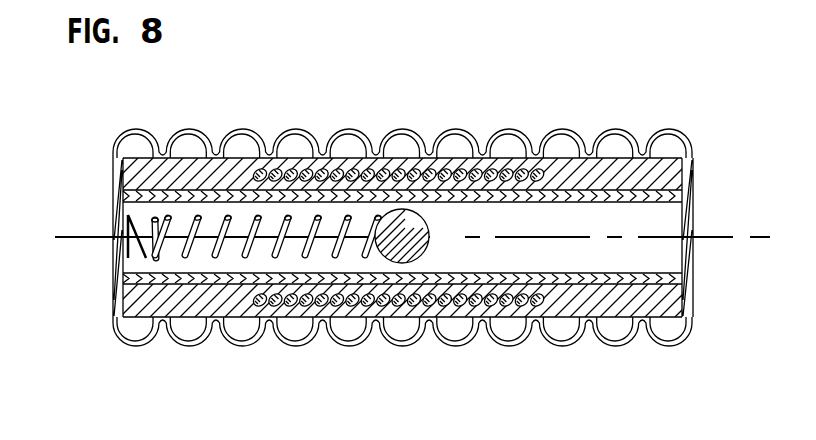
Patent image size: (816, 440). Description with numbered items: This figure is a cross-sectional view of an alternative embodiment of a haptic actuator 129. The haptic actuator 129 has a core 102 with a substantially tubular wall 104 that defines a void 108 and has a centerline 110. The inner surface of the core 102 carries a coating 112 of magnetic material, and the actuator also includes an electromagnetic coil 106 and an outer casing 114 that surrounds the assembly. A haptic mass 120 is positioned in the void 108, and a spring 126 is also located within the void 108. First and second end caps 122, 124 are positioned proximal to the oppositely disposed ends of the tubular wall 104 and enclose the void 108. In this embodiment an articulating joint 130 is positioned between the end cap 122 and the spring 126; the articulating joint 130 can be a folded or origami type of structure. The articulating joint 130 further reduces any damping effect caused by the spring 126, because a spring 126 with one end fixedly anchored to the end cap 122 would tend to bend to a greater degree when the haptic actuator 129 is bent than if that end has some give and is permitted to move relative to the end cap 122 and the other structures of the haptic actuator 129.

The core 102 is at (668, 160).
The tubular wall 104 is at (680, 186).
The electromagnetic coil 106 is at (261, 302).
The void 108 is at (133, 213).
The centerline 110 is at (77, 239).
The coating of magnetic material 112 is at (168, 273).
The casing 114 is at (558, 346).
The haptic mass 120 is at (383, 254).
The first end cap 122 is at (111, 172).
The second end cap 124 is at (692, 302).
The spring 126 is at (199, 219).
The haptic actuator 129 is at (684, 112).
The articulating joint 130 is at (137, 241).